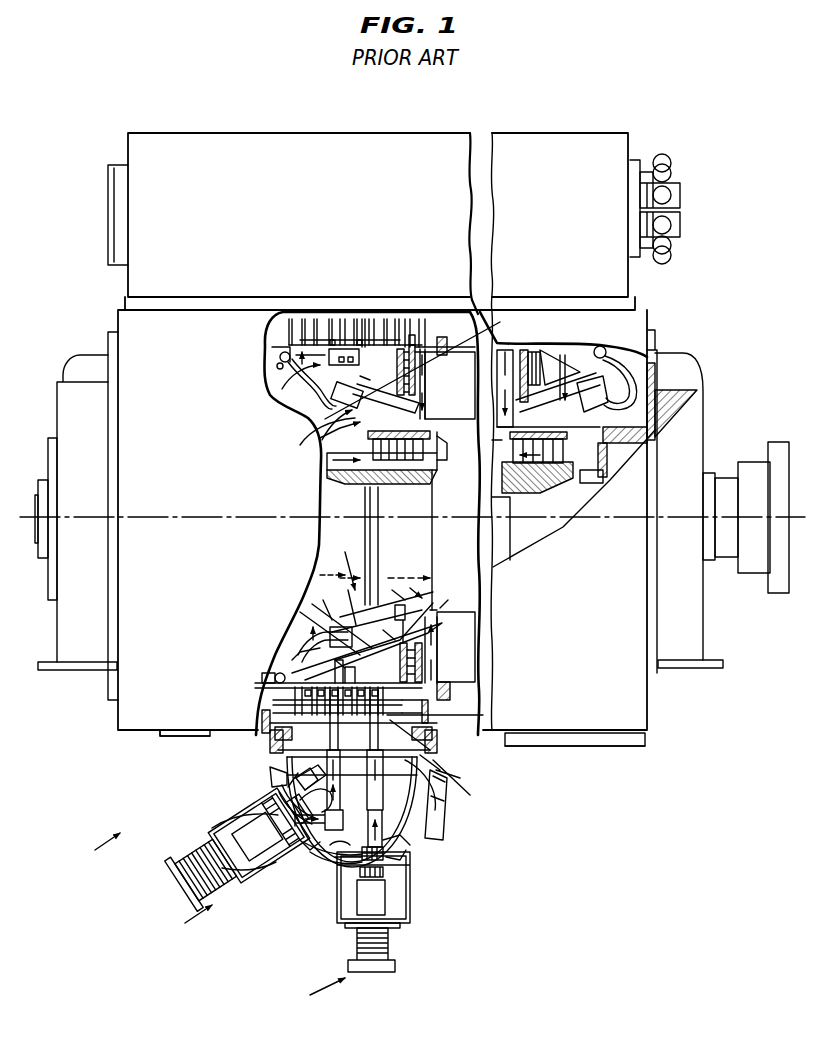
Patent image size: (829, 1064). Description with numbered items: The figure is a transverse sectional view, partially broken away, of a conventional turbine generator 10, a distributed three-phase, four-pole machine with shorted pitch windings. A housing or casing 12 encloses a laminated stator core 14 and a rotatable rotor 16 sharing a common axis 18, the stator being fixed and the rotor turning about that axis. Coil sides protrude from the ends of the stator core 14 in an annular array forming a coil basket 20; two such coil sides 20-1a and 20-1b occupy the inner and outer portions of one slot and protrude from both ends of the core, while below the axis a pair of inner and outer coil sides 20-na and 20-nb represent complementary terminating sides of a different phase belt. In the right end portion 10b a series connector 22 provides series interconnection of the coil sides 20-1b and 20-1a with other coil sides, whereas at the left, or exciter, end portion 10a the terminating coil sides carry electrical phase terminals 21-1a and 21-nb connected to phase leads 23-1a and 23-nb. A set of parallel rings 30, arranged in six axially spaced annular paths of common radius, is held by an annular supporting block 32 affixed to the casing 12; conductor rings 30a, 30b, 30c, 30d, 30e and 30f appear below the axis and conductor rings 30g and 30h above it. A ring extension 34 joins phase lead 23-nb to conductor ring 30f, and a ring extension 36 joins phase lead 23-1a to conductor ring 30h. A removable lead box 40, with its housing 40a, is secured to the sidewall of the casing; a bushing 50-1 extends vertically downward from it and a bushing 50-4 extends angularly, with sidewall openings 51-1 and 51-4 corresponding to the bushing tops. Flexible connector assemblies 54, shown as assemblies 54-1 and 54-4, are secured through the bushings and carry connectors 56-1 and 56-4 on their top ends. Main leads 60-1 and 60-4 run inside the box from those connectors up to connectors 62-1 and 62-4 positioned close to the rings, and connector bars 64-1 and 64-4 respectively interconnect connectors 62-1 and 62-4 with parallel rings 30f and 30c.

The turbine generator 10 is at (96, 848).
The left end portion 10a is at (195, 600).
The end portion 10b is at (582, 617).
The housing 12 is at (140, 733).
The stator core 14 is at (467, 402).
The rotor 16 is at (405, 507).
The axis 18 is at (462, 517).
The coil basket 20 is at (332, 445).
The coil side 20-1a is at (358, 452).
The coil side 20-1b is at (485, 348).
The inner coil side 20-na is at (327, 578).
The outer coil side 20-nb is at (386, 578).
The electrical phase terminal 21-1a is at (318, 430).
The electrical phase terminal 21-nb is at (345, 615).
The series connector 22 is at (581, 348).
The phase lead 23-1a is at (392, 312).
The phase lead 23-nb is at (320, 655).
The parallel rings 30 is at (290, 725).
The conductor ring 30a is at (278, 672).
The conductor ring 30b is at (298, 660).
The conductor ring 30c is at (270, 706).
The conductor ring 30d is at (438, 600).
The conductor ring 30e is at (420, 600).
The conductor ring 30f is at (480, 690).
The conductor ring 30g is at (332, 318).
The conductor ring 30h is at (360, 318).
The annular supporting block 32 is at (272, 380).
The ring extension 34 is at (412, 655).
The ring extension 36 is at (386, 318).
The lead box 40 is at (333, 895).
The pump housing 40a is at (420, 742).
The bushing 50-1 is at (412, 911).
The bushing 50-4 is at (255, 893).
The opening 51-1 is at (405, 852).
The opening 51-4 is at (283, 779).
The flexible connector assemblies 54 is at (255, 956).
The flexible connector assembly 54-1 is at (388, 940).
The flexible connector assembly 54-4 is at (205, 862).
The connector 56-1 is at (327, 832).
The connector 56-4 is at (185, 867).
The main lead 60-1 is at (433, 808).
The main lead 60-4 is at (318, 860).
The connector 62-1 is at (440, 768).
The connector 62-4 is at (305, 775).
The connector bar 64-1 is at (483, 715).
The connector bar 64-4 is at (300, 768).